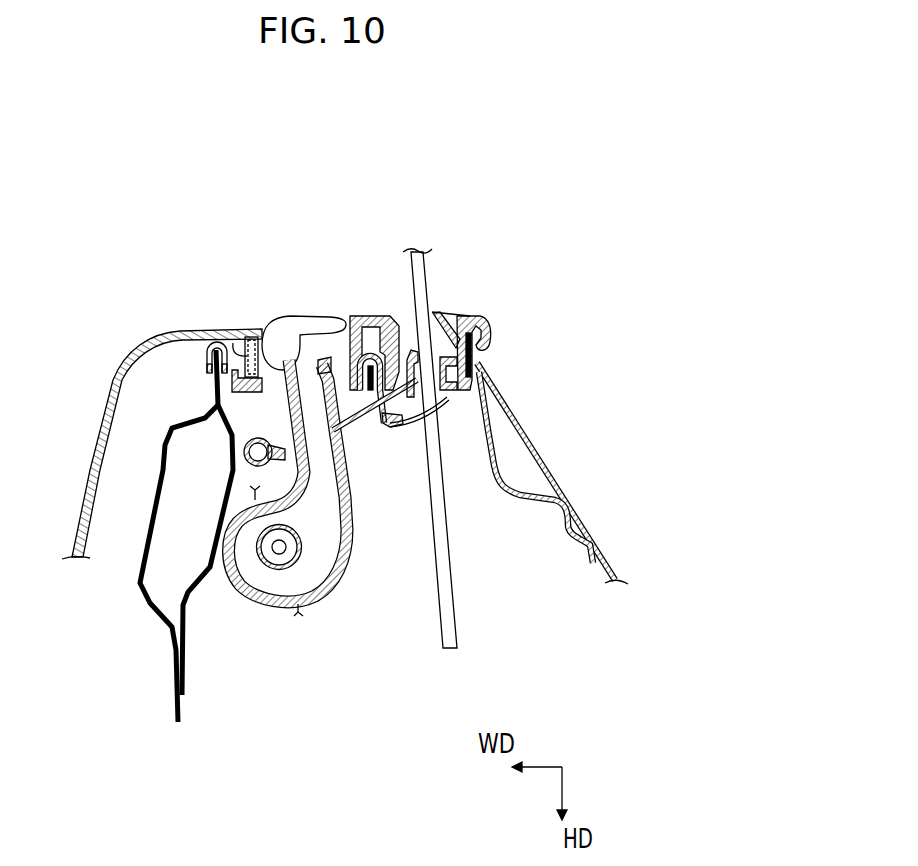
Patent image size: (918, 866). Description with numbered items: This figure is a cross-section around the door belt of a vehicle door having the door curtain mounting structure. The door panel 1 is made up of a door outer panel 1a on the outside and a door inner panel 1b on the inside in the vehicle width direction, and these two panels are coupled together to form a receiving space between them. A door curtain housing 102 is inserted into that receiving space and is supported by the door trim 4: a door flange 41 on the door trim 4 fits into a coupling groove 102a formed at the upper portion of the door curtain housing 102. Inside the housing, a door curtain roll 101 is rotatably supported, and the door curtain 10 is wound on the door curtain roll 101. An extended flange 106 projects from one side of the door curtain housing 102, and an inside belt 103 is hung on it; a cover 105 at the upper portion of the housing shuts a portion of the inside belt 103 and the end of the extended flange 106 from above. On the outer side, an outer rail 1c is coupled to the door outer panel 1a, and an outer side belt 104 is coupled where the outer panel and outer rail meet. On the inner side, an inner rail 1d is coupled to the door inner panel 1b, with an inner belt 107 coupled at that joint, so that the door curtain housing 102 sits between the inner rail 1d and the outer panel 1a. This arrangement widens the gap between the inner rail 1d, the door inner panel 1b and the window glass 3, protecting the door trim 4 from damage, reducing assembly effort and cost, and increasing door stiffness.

The door panel 1 is at (381, 536).
The door outer panel 1a is at (572, 489).
The door inner panel 1b is at (147, 615).
The outer rail 1c is at (528, 505).
The inner rail 1d is at (187, 620).
The window glass 3 is at (456, 630).
The door trim 4 is at (158, 343).
The door curtain 10 is at (289, 345).
The door flange 41 is at (243, 343).
The door curtain roll 101 is at (280, 572).
The door curtain housing 102 is at (324, 592).
The coupling groove 102a is at (247, 384).
The inside belt 103 is at (397, 422).
The outer side belt 104 is at (491, 341).
The cover 105 is at (360, 313).
The extended flange 106 is at (363, 415).
The inner belt 107 is at (205, 346).